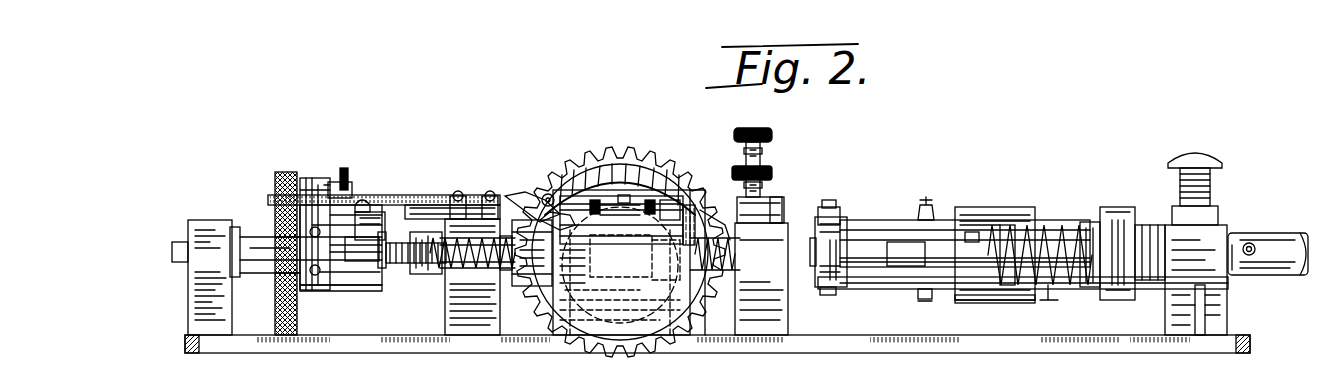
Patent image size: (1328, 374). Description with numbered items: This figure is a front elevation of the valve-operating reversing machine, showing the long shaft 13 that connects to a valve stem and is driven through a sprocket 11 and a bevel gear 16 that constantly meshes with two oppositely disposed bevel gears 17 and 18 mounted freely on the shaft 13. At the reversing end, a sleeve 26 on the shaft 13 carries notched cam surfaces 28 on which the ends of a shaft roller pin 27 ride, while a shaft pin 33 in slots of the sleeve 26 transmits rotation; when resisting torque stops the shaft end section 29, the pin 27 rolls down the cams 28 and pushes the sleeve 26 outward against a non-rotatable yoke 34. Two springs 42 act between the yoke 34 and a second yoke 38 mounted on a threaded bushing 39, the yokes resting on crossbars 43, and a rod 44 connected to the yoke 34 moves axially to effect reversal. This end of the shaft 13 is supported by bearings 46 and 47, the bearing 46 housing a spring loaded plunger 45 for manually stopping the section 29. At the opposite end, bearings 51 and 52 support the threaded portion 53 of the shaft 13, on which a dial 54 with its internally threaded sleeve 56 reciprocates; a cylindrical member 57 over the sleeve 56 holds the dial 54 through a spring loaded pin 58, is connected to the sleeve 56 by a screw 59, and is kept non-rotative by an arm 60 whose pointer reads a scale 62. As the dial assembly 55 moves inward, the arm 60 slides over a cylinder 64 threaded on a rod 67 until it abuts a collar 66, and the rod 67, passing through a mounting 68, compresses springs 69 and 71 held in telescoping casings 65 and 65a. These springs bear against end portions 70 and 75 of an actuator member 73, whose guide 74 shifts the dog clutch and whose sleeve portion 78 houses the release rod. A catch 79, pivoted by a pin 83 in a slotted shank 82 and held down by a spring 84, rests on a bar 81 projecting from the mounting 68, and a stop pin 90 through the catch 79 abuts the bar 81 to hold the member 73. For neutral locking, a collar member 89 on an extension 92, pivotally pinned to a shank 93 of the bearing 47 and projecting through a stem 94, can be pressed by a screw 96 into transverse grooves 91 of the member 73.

The sprocket 11 is at (594, 160).
The shaft 13 is at (180, 240).
The bevel gear 16 is at (560, 160).
The bevel gear 17 is at (706, 190).
The bevel gear 18 is at (528, 200).
The sleeve 26 is at (892, 218).
The shaft roller pin 27 is at (832, 205).
The cam surfaces 28 is at (838, 208).
The shaft end section 29 is at (1047, 228).
The shaft pin 33 is at (926, 200).
The yoke 34 is at (990, 207).
The yoke 38 is at (1118, 207).
The threaded bushing 39 is at (1090, 222).
The springs 42 is at (1050, 300).
The crossbars 43 is at (983, 303).
The rod 44 is at (878, 290).
The spring loaded plunger 45 is at (1222, 160).
The bearing 46 is at (1228, 300).
The bearing 47 is at (832, 288).
The bearing 51 is at (445, 300).
The bearing 52 is at (188, 288).
The threaded portion 53 is at (412, 205).
The dial 54 is at (286, 172).
The dial assembly 55 is at (314, 178).
The internally threaded sleeve 56 is at (314, 285).
The cylindrical member 57 is at (338, 292).
The spring loaded pin 58 is at (343, 168).
The screw 59 is at (364, 204).
The arm 60 is at (275, 272).
The scale 62 is at (268, 198).
The cylinder 64 is at (358, 284).
The casing 65 is at (753, 272).
The casing 65a is at (500, 272).
The collar 66 is at (381, 286).
The rod 67 is at (406, 265).
The mounting 68 is at (532, 288).
The spring 69 is at (762, 290).
The end portion 70 is at (862, 286).
The spring 71 is at (460, 270).
The actuator member 73 is at (598, 296).
The guide 74 is at (652, 297).
The end portion 75 is at (426, 275).
The sleeve portion 78 is at (380, 212).
The catch 79 is at (670, 198).
The bar 81 is at (614, 200).
The slotted shank 82 is at (546, 194).
The pin 83 is at (565, 210).
The spring 84 is at (690, 205).
The collar member 89 is at (722, 210).
The stop pin 90 is at (924, 300).
The transverse grooves 91 is at (760, 200).
The extension 92 is at (752, 200).
The shank 93 is at (784, 207).
The stem 94 is at (760, 198).
The screw 96 is at (756, 130).